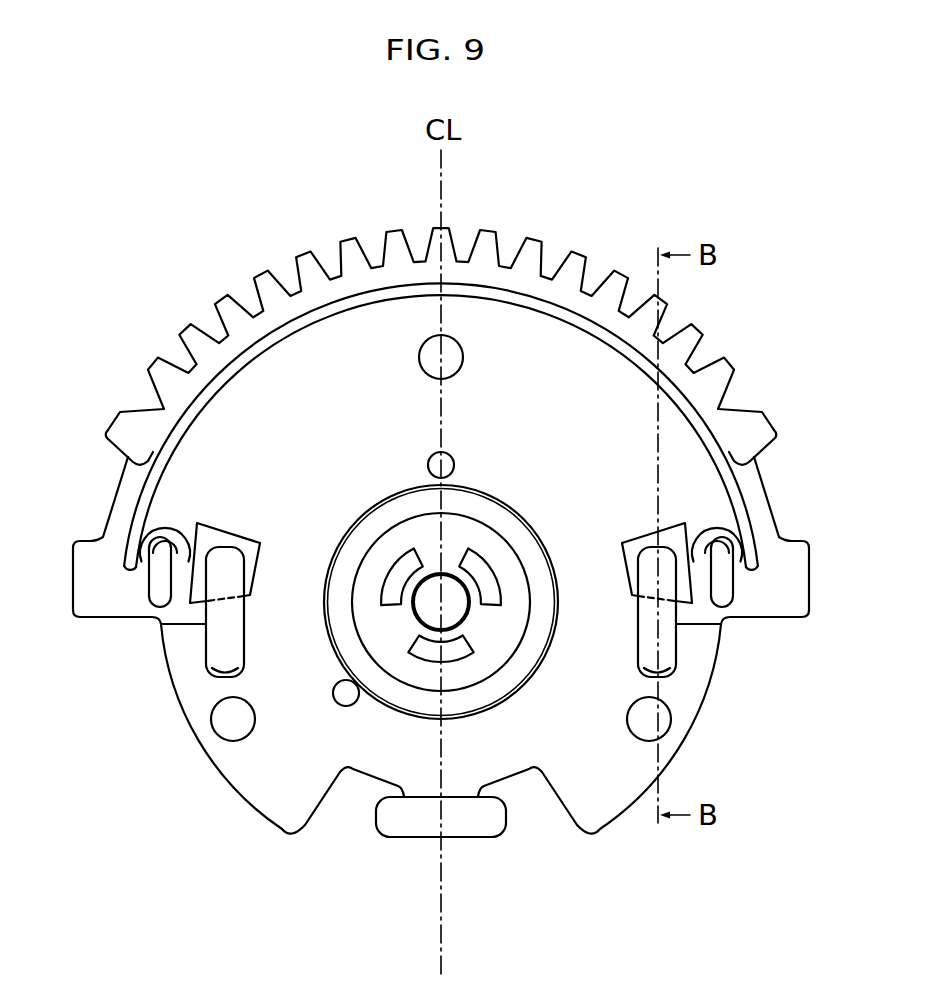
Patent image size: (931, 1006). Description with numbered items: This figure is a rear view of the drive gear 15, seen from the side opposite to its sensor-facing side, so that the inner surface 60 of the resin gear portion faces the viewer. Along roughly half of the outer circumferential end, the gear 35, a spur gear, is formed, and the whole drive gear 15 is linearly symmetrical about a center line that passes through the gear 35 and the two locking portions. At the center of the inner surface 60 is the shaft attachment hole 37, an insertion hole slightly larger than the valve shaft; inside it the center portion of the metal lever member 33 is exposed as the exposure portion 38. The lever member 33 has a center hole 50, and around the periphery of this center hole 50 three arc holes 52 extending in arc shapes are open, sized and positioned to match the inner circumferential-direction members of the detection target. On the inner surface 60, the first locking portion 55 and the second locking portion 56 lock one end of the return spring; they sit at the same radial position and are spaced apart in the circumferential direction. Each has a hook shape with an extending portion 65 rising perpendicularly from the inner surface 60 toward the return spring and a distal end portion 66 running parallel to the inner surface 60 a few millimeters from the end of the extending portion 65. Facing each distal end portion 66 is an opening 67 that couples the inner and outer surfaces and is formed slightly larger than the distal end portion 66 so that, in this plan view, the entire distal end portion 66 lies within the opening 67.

The drive gear 15 is at (287, 793).
The gear 35 is at (303, 256).
The inner surface 60 is at (575, 370).
The openings 67 is at (237, 542).
The distal end portions 66 is at (228, 536).
The second locking portion 56 is at (220, 632).
The first locking portion 55 is at (667, 642).
The extending portions 65 is at (205, 665).
The exposure portion 38 is at (492, 652).
The shaft attachment hole 37 is at (365, 628).
The center hole 50 is at (453, 607).
The arc holes 52 is at (393, 572).
The lever member 33 is at (391, 646).